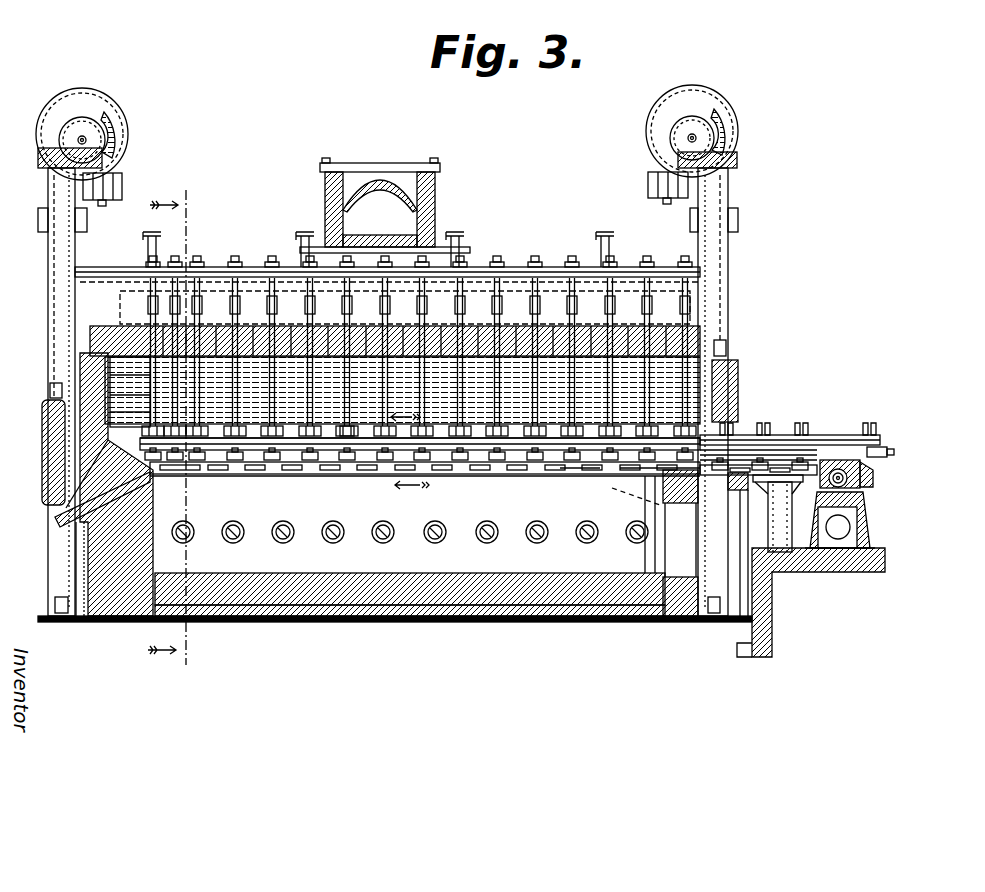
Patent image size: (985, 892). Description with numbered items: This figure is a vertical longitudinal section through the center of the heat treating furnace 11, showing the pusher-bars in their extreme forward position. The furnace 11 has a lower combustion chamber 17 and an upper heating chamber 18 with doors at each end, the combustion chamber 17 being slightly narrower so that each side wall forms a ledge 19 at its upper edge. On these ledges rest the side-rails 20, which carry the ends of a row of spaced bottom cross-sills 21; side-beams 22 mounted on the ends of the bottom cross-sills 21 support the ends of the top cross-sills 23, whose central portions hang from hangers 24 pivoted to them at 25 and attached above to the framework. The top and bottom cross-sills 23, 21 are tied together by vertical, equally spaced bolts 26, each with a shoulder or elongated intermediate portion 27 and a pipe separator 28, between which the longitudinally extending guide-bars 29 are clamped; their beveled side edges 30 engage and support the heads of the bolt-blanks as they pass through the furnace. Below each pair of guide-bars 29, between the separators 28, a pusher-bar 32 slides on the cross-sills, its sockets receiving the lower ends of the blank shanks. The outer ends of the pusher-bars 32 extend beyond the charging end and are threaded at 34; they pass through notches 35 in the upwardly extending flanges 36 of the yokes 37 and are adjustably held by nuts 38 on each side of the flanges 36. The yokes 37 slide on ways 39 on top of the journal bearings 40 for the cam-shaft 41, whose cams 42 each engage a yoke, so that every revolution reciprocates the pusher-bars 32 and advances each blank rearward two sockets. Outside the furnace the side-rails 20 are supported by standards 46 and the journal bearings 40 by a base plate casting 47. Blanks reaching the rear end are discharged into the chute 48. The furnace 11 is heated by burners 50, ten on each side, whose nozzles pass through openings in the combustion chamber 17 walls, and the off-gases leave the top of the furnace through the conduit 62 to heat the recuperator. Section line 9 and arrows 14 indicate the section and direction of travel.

The section line 9- 9 is at (174, 426).
The heat treating furnace 11 is at (325, 606).
The direction arrow 14 is at (398, 447).
The combustion chamber 17 is at (487, 575).
The heating chamber 18 is at (122, 376).
The ledge 19 is at (640, 465).
The side-rails 20 is at (575, 462).
The bottom cross-sills 21 is at (300, 468).
The side-beams 22 is at (470, 437).
The top cross-sills 23 is at (283, 430).
The hangers 24 is at (272, 268).
The pivot 25 is at (312, 430).
The bolts 26 is at (205, 442).
The shoulder or elongated intermediate portion 27 is at (352, 430).
The pipe separator 28 is at (212, 465).
The guide-bars 29 is at (542, 440).
The beveled side edges 30 is at (830, 437).
The pusher-bar 32 is at (325, 462).
The threaded cylindrical portion 34 is at (894, 456).
The notches 35 is at (862, 460).
The upwardly extending flanges 36 is at (866, 480).
The yokes 37 is at (852, 445).
The nuts 38 is at (890, 450).
The ways 39 is at (790, 500).
The journal bearings 40 is at (830, 496).
The cam-shaft 41 is at (832, 466).
The cams 42 is at (866, 500).
The standards 46 is at (792, 552).
The base plate casting 47 is at (858, 548).
The chute 48 is at (110, 480).
The burners 50 is at (340, 540).
The conduit 62 is at (408, 212).